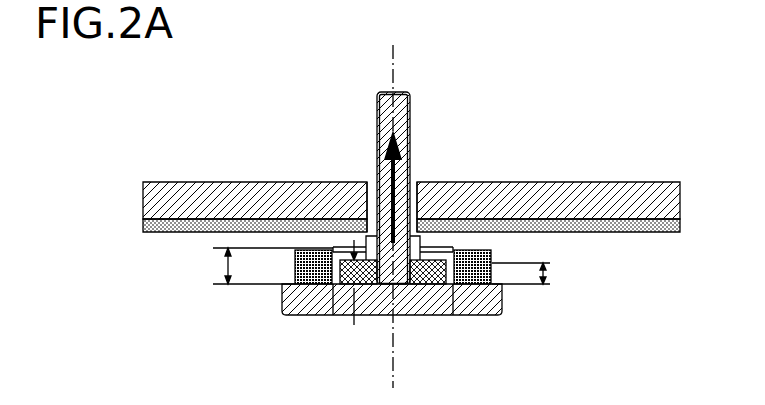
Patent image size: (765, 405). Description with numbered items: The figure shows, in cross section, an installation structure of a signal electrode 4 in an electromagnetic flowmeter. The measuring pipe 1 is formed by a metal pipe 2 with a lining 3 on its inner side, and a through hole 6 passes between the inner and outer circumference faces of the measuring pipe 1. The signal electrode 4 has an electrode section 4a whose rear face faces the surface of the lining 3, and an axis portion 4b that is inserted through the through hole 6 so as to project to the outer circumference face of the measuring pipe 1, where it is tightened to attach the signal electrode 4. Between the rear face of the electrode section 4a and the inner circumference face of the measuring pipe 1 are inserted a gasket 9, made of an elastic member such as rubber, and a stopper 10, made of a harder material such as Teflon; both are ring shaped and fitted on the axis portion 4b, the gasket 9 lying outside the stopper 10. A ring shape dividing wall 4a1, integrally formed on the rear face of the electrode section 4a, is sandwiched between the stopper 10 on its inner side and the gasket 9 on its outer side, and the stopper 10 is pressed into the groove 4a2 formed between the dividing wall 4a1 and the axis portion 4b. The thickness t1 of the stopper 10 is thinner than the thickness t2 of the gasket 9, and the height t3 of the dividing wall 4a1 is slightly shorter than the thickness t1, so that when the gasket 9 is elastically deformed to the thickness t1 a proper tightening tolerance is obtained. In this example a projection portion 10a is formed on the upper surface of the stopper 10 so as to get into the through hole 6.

The measuring pipe 1 is at (411, 216).
The metal pipe 2 is at (637, 183).
The lining 3 is at (630, 232).
The signal electrode 4 is at (387, 234).
The electrode section 4a is at (387, 262).
The ring shape dividing wall 4a1 is at (333, 246).
The groove 4a2 is at (340, 284).
The axis portion 4b is at (410, 132).
The through hole 6 is at (366, 240).
The gasket 9 is at (285, 285).
The stopper 10 is at (427, 298).
The projection portion 10a is at (418, 247).
The thickness of the stopper t1 is at (357, 295).
The thickness of the gasket t2 is at (266, 266).
The height of the ring shape dividing wall t3 is at (533, 278).